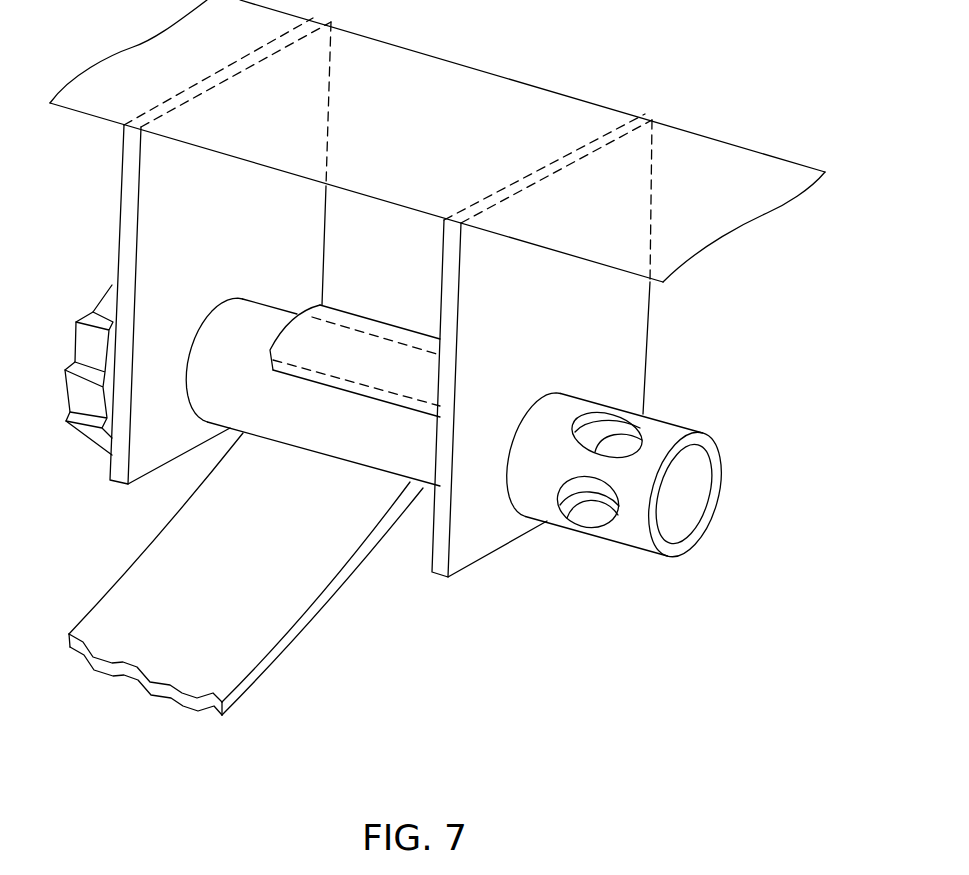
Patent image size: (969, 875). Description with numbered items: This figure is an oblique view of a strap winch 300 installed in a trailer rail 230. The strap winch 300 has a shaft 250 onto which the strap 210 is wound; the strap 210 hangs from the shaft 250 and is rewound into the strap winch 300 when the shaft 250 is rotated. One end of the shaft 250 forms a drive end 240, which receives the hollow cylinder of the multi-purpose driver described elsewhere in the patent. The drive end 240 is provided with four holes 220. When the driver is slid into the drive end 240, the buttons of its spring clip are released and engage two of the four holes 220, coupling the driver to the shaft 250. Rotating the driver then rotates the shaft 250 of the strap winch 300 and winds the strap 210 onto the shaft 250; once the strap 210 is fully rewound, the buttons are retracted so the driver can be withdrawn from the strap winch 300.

The strap 210 is at (267, 675).
The holes 220 is at (580, 517).
The trailer rail 230 is at (558, 91).
The drive end 240 is at (623, 547).
The shaft 250 is at (207, 313).
The strap winch 300 is at (770, 333).